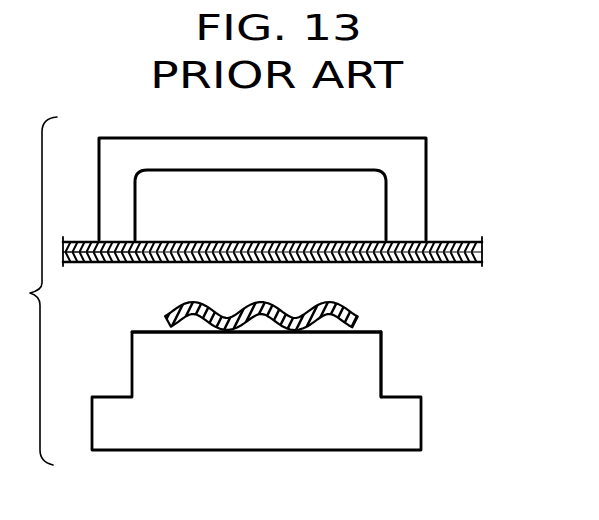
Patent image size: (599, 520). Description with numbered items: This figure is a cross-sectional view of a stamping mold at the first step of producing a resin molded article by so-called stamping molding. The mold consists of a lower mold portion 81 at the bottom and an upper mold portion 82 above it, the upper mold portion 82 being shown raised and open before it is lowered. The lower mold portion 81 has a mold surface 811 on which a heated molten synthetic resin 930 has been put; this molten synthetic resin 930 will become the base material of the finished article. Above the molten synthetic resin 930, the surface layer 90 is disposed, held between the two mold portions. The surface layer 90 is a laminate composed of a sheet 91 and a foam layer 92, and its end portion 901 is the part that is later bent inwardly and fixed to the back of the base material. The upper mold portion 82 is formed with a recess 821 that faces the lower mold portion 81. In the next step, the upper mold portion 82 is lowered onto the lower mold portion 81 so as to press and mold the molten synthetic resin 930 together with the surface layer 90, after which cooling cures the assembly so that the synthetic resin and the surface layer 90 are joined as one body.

The lower mold portion 81 is at (125, 437).
The mold surface 811 is at (267, 335).
The upper mold portion 82 is at (338, 158).
The recess of cover member 821 is at (218, 168).
The surface layer 90 is at (280, 237).
The end portion 901 is at (103, 263).
The sheet 91 is at (470, 245).
The foam layer 92 is at (472, 262).
The molten synthetic resin 930 is at (345, 313).